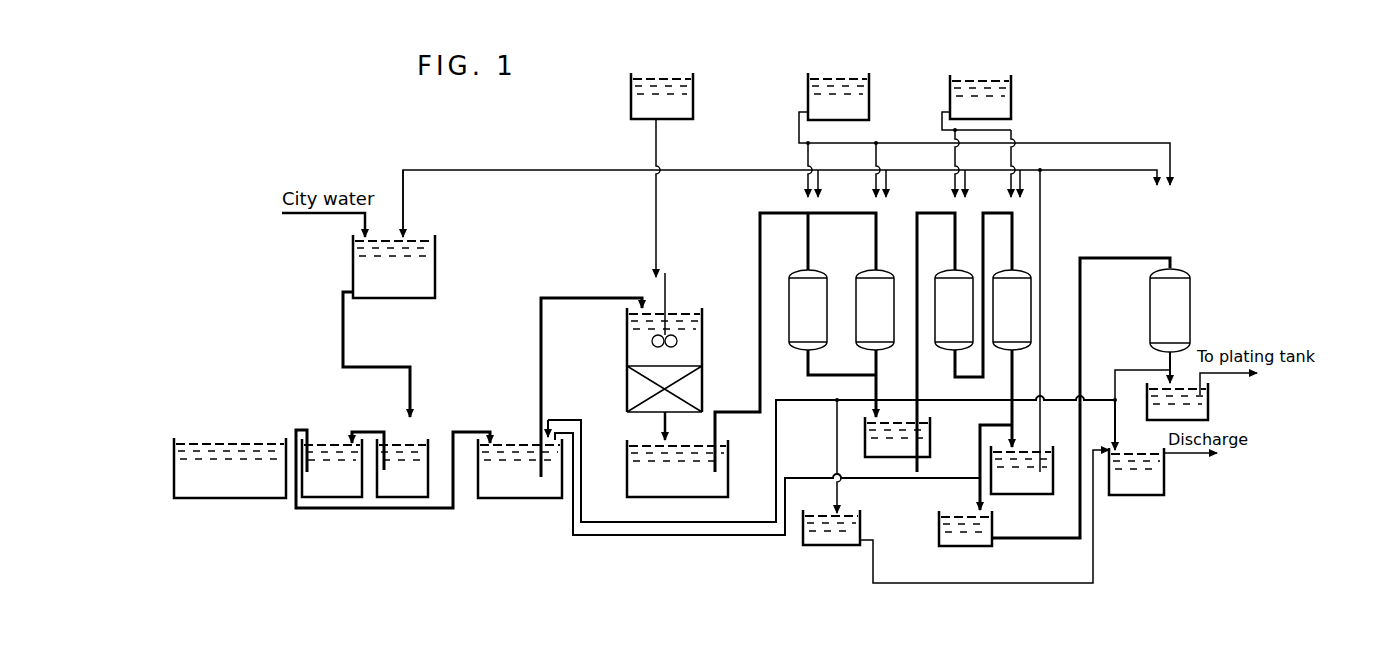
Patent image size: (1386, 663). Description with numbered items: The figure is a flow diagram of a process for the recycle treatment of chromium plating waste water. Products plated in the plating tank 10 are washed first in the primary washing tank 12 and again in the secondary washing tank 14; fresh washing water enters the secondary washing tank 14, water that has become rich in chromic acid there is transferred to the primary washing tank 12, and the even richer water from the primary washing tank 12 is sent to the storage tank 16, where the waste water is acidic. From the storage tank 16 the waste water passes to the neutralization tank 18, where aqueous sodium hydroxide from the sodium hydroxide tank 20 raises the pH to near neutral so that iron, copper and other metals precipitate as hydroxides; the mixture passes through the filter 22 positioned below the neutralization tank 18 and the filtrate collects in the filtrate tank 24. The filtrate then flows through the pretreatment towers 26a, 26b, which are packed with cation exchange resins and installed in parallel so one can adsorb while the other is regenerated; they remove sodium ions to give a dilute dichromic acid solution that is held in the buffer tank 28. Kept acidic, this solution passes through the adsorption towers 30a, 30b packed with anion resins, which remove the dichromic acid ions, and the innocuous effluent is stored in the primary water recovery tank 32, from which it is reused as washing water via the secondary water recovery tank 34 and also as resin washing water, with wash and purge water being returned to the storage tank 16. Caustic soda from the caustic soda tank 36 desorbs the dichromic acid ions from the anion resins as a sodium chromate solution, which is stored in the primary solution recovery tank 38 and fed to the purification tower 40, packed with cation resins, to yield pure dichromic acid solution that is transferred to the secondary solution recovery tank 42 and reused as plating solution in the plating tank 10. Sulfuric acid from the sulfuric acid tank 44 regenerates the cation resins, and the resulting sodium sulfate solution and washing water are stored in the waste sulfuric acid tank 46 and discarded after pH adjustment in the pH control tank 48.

The plating tank 10 is at (224, 455).
The primary washing tank 12 is at (328, 447).
The secondary washing tank 14 is at (398, 492).
The storage tank 16 is at (512, 485).
The neutralization tank 18 is at (698, 333).
The sodium hydroxide tank 20 is at (684, 103).
The filter 22 is at (626, 390).
The filtrate tank 24 is at (636, 478).
The pretreatment tower 26a is at (800, 272).
The pretreatment tower 26b is at (866, 272).
The buffer tank 28 is at (917, 446).
The adsorption tower 30a is at (945, 347).
The adsorption tower 30b is at (1018, 270).
The primary water recovery tank 32 is at (1028, 490).
The secondary water recovery tank 34 is at (428, 272).
The caustic soda tank 36 is at (1001, 103).
The primary solution recovery tank 38 is at (960, 535).
The purification tower 40 is at (1182, 303).
The secondary solution recovery tank 42 is at (1200, 404).
The sulfuric acid tank 44 is at (858, 103).
The waste sulfuric acid tank 46 is at (828, 535).
The pH control tank 48 is at (1136, 488).